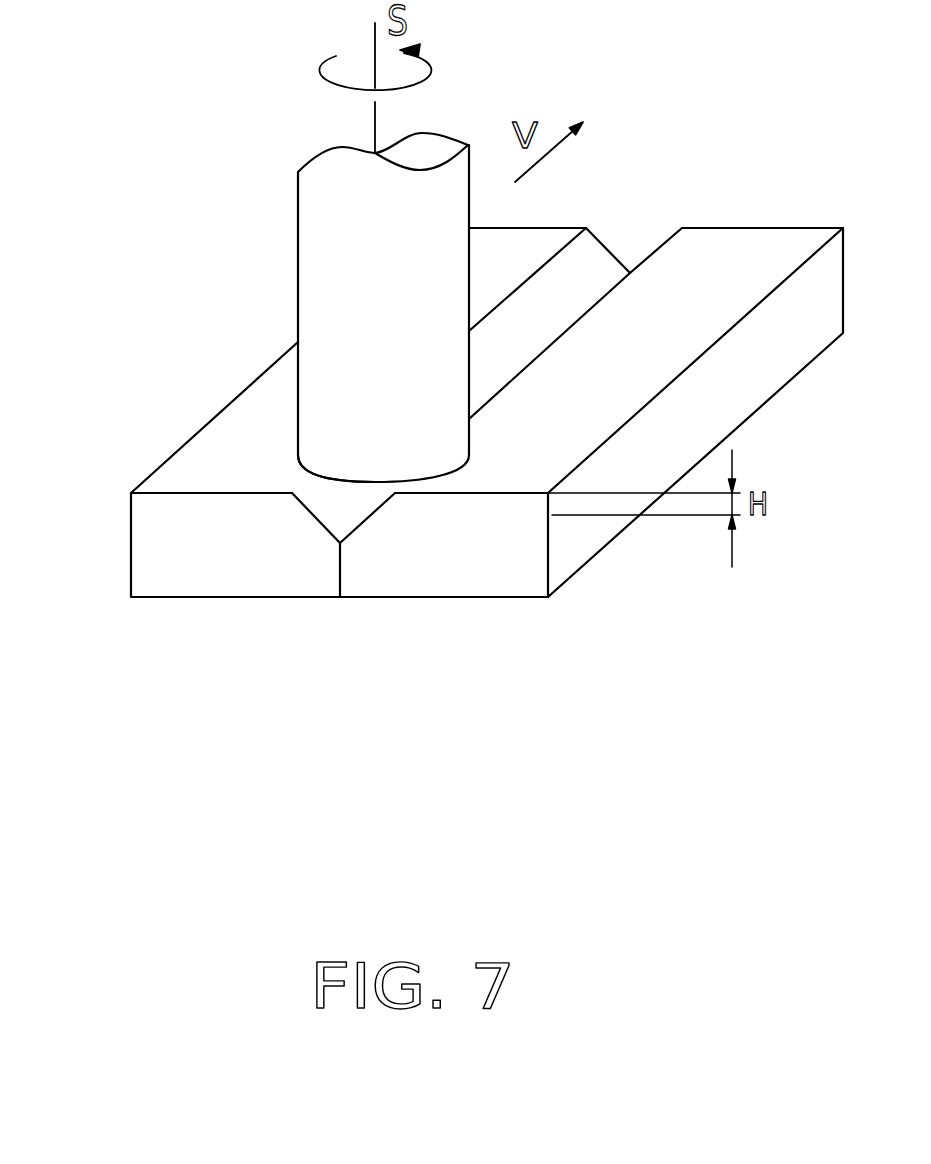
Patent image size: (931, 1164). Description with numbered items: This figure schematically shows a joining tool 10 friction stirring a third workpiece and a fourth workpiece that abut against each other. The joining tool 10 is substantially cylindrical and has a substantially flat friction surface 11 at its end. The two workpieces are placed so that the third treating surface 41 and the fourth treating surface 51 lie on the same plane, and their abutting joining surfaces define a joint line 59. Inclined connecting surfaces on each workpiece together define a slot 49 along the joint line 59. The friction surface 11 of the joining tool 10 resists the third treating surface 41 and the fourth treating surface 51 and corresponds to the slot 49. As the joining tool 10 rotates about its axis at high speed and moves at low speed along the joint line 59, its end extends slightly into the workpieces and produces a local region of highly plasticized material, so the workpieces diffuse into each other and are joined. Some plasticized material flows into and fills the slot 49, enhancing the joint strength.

The joining tool 10 is at (333, 225).
The friction surface 11 is at (320, 474).
The third treating surface 41 is at (240, 438).
The fourth treating surface 51 is at (715, 267).
The slot 49 is at (352, 515).
The joint line 59 is at (338, 543).